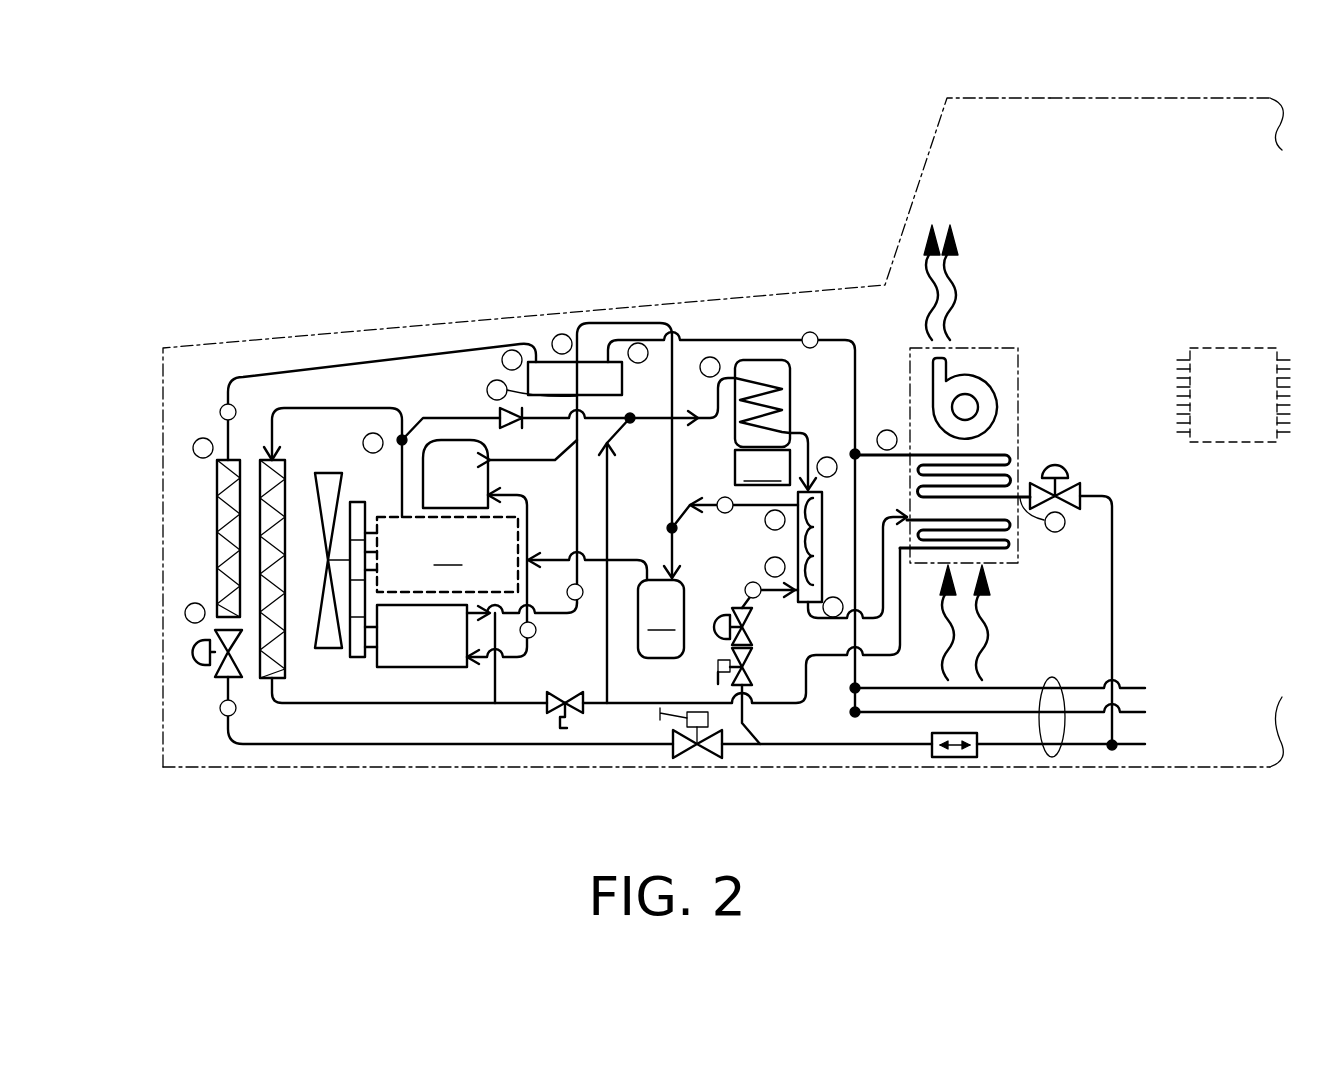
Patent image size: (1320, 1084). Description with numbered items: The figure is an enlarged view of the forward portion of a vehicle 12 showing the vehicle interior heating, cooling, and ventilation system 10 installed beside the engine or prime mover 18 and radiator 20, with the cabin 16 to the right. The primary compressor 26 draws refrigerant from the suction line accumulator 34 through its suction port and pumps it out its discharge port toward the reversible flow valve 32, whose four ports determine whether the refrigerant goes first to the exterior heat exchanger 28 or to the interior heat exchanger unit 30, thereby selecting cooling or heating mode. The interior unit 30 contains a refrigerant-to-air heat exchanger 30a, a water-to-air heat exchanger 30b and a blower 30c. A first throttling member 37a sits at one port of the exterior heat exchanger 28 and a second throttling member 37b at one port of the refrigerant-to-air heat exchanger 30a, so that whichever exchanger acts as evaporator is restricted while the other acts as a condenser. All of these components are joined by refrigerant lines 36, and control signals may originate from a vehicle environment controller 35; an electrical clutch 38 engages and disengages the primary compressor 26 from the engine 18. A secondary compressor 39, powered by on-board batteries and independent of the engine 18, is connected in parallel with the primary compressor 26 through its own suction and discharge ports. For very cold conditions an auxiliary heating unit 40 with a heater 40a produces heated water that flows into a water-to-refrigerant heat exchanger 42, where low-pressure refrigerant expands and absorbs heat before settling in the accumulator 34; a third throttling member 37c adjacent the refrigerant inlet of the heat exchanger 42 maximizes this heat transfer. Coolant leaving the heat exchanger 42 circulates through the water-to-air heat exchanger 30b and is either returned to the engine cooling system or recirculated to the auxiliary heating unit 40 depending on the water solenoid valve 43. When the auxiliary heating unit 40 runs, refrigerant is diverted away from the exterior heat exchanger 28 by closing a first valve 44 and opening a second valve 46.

The vehicle interior heating, cooling, and ventilation system 10 is at (354, 265).
The vehicle 12 is at (912, 177).
The interior or cabin 16 is at (1108, 209).
The engine or prime mover 18 is at (447, 554).
The radiator 20 is at (282, 460).
The primary compressor 26 is at (402, 645).
The exterior heat exchanger 28 is at (217, 540).
The primary interior air handler or heat exchanger unit 30 is at (1000, 356).
The refrigerant-to-air heat exchanger 30a is at (1000, 455).
The water-to-air heat exchanger 30b is at (1000, 545).
The blower 30c is at (985, 405).
The reversible flow valve 32 is at (580, 378).
The suction line accumulator 34 is at (661, 619).
The vehicle environment controller 35 is at (1245, 358).
The refrigerant lines 36 is at (220, 412).
The first throttling or expansion member 37a is at (200, 652).
The second throttling member 37b is at (1062, 467).
The third throttling member 37c is at (752, 612).
The electrical clutch 38 is at (353, 648).
The secondary compressor 39 is at (458, 448).
The auxiliary heating unit 40 is at (757, 368).
The heater 40a is at (762, 467).
The water-to-refrigerant heat exchanger 42 is at (822, 512).
The water solenoid valve 43 is at (580, 713).
The first valve 44 is at (708, 748).
The second valve 46 is at (732, 652).